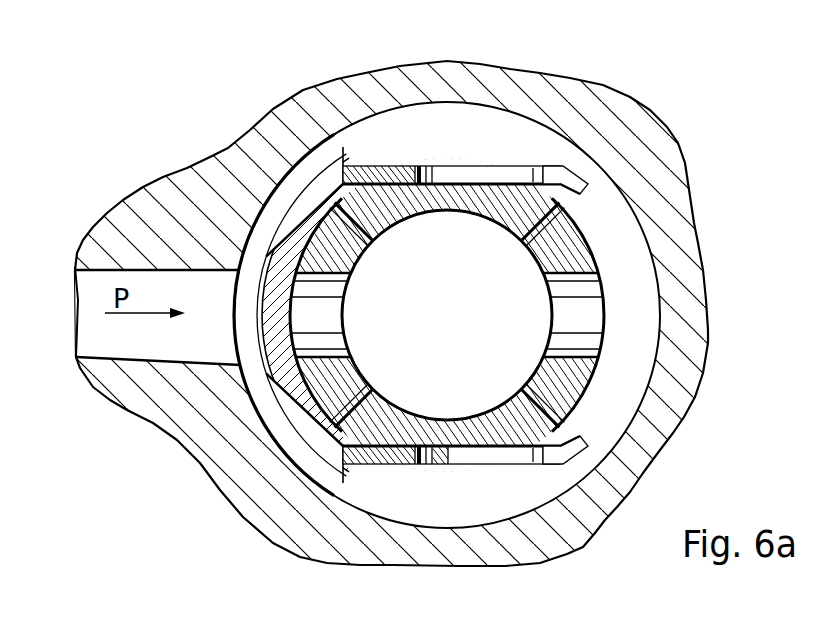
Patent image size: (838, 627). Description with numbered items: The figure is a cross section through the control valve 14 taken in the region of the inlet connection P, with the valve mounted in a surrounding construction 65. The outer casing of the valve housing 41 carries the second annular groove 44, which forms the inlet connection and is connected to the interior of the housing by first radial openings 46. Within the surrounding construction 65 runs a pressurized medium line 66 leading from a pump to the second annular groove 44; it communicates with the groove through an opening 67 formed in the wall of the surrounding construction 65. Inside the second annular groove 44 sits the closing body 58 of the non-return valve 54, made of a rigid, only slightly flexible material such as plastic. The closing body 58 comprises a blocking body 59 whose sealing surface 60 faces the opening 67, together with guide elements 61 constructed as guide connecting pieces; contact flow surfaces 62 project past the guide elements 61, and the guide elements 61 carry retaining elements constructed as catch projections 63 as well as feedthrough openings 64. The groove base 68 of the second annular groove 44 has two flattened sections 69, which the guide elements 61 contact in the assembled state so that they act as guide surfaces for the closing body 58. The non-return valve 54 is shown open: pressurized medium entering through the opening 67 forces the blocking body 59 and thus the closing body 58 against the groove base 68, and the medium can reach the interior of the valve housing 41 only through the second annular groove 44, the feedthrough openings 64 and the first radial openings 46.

The control valve 14 is at (708, 163).
The valve housing 41 is at (576, 164).
The second annular groove 44 is at (574, 180).
The first radial openings 46 is at (585, 326).
The non-return valve 54 is at (258, 238).
The closing body 58 is at (310, 213).
The blocking body 59 is at (277, 310).
The sealing surface 60 is at (277, 416).
The guide elements 61 is at (478, 175).
The contact flow surfaces 62 is at (352, 145).
The catch projections 63 is at (592, 178).
The feedthrough openings 64 is at (445, 173).
The surrounding construction 65 is at (145, 407).
The pressurized medium line 66 is at (92, 337).
The opening 67 is at (238, 323).
The groove base 68 is at (585, 228).
The flattened sections 69 is at (502, 162).